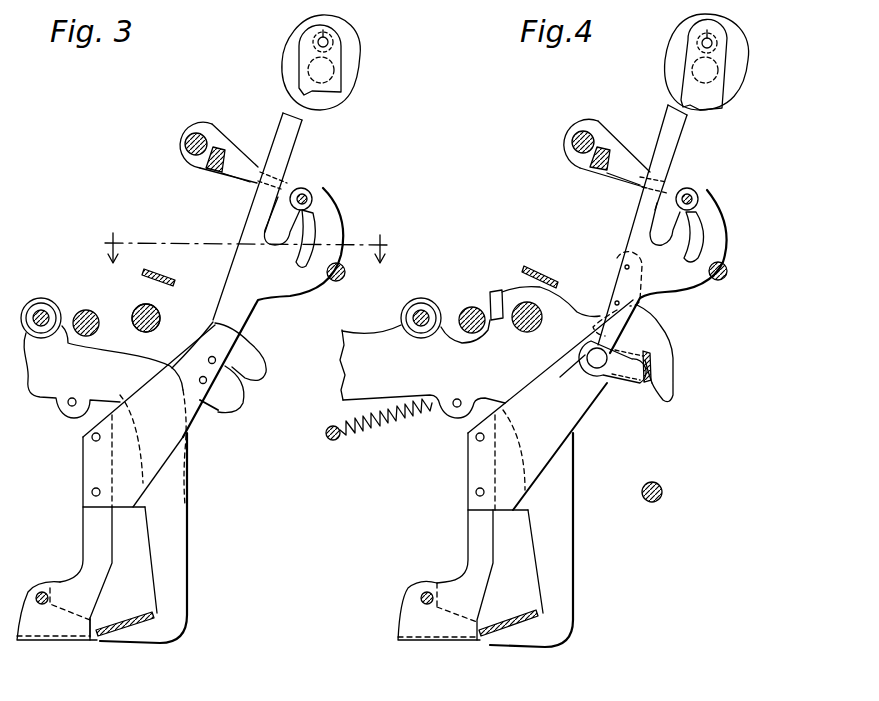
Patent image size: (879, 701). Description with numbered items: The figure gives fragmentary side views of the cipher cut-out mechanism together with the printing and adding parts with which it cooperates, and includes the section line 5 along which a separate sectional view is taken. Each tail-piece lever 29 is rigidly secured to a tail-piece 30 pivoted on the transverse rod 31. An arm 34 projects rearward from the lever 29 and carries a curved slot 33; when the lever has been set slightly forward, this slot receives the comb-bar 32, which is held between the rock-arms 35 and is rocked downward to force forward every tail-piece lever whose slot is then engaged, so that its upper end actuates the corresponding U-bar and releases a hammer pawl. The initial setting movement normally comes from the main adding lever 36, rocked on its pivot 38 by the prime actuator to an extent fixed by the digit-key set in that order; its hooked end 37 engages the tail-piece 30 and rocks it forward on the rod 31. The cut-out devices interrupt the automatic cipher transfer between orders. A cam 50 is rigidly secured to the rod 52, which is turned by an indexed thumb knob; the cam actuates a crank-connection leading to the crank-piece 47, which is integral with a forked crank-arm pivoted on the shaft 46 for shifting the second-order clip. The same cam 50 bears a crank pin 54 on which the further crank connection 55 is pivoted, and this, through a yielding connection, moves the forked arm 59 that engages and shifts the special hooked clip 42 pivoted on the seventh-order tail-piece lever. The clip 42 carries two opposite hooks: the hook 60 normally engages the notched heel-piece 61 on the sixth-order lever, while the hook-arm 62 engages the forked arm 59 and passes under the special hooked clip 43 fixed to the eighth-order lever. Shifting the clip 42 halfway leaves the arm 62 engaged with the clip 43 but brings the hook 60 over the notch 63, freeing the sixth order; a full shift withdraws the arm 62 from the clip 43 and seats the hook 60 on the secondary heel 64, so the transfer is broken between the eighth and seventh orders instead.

In FIG. 3, the section line 5— 5 is at (245, 248).
In FIG. 3, the tail-piece lever 29 is at (287, 147).
In FIG. 4, the tail-piece lever 29 is at (678, 137).
In FIG. 3, the tail-piece 30 is at (137, 481).
In FIG. 4, the tail-piece 30 is at (535, 470).
In FIG. 3, the transverse rod 31 is at (50, 582).
In FIG. 4, the transverse rod 31 is at (418, 592).
In FIG. 3, the comb-bar 32 is at (245, 163).
In FIG. 4, the comb-bar 32 is at (632, 170).
In FIG. 3, the curved slot 33 is at (315, 222).
In FIG. 4, the curved slot 33 is at (700, 235).
In FIG. 3, the arm 34 is at (307, 277).
In FIG. 4, the arm 34 is at (727, 257).
In FIG. 3, the rock-arm 35 is at (307, 188).
In FIG. 4, the rock-arm 35 is at (693, 187).
In FIG. 3, the main adding lever 36 is at (118, 404).
In FIG. 4, the main adding lever 36 is at (463, 363).
In FIG. 3, the hooked end 37 is at (147, 640).
In FIG. 4, the hooked end 37 is at (546, 638).
In FIG. 3, the pivot 38 is at (42, 313).
In FIG. 4, the pivot 38 is at (422, 313).
In FIG. 4, the special hooked clip 42 is at (641, 388).
In FIG. 4, the special hooked clip 43 is at (674, 344).
In FIG. 3, the shaft 46 is at (132, 305).
In FIG. 4, the shaft 46 is at (522, 300).
In FIG. 3, the crank-piece 47 is at (160, 263).
In FIG. 4, the crank-piece 47 is at (540, 267).
In FIG. 3, the cam 50 is at (362, 52).
In FIG. 4, the cam 50 is at (745, 85).
In FIG. 3, the rod 52 is at (296, 68).
In FIG. 4, the rod 52 is at (680, 80).
In FIG. 3, the crank pin 54 is at (330, 42).
In FIG. 4, the crank pin 54 is at (713, 43).
In FIG. 3, the crank connection 55 is at (338, 85).
In FIG. 4, the crank connection 55 is at (715, 97).
In FIG. 4, the forked arm 59 is at (578, 320).
In FIG. 4, the hook 60 is at (652, 397).
In FIG. 3, the notched heel-piece 61 is at (257, 357).
In FIG. 4, the hook-arm 62 is at (653, 363).
In FIG. 3, the notch 63 is at (243, 387).
In FIG. 3, the secondary heel 64 is at (223, 415).